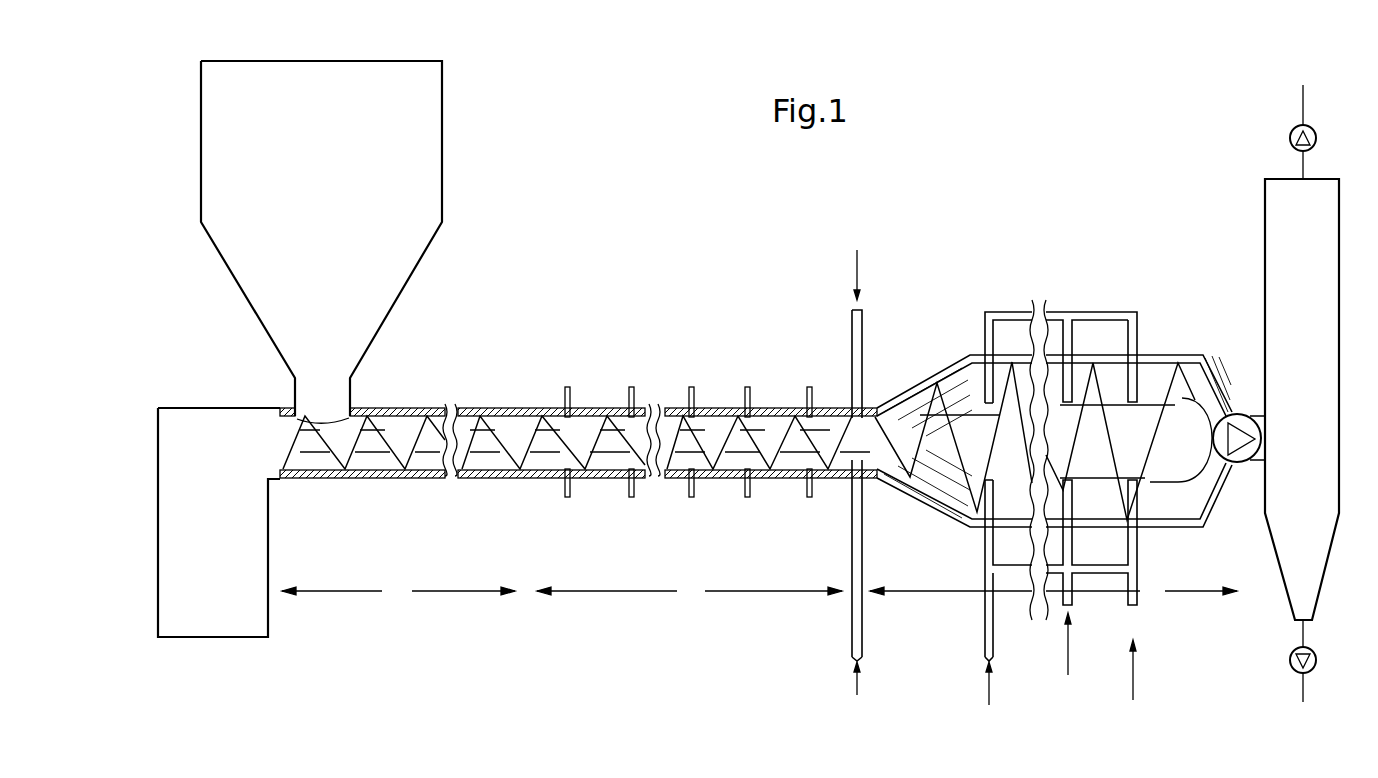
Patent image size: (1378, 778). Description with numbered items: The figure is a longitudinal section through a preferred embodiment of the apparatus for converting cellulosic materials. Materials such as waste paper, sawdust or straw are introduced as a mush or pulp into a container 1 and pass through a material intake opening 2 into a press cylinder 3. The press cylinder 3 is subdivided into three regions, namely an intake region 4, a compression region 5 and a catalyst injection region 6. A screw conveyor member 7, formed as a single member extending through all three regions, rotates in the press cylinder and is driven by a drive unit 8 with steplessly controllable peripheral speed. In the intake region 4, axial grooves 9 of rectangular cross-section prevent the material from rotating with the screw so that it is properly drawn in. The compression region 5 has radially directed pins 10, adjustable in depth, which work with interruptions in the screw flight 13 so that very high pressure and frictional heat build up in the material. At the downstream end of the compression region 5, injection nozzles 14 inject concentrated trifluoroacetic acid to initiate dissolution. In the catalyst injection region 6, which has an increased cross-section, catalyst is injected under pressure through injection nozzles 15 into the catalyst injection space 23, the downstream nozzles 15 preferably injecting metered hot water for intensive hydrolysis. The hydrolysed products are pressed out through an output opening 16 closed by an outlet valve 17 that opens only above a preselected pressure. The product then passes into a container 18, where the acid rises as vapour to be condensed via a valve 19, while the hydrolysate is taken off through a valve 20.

The container 1 is at (428, 186).
The material intake opening 2 is at (313, 412).
The press cylinder 3 is at (545, 403).
The intake region 4 is at (398, 591).
The compression region 5 is at (689, 591).
The catalyst injection region 6 is at (1053, 591).
The screw conveyor member 7 is at (500, 437).
The drive unit 8 is at (191, 425).
The axial grooves 9 is at (422, 420).
The pins 10 is at (572, 390).
The screw flight 13 is at (605, 460).
The injection nozzles 14 is at (850, 338).
The injection nozzles 15 is at (983, 320).
The output opening 16 is at (1240, 416).
The outlet valve 17 is at (1237, 447).
The container 18 is at (1287, 237).
The valve 19 is at (1290, 135).
The valve 20 is at (1292, 668).
The catalyst injection space 23 is at (958, 383).